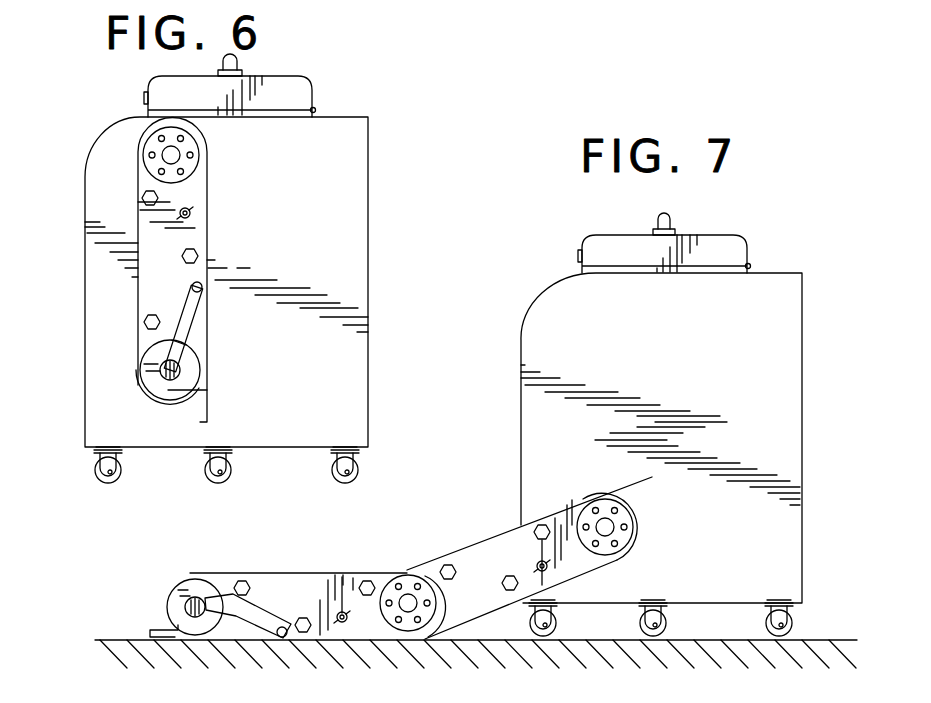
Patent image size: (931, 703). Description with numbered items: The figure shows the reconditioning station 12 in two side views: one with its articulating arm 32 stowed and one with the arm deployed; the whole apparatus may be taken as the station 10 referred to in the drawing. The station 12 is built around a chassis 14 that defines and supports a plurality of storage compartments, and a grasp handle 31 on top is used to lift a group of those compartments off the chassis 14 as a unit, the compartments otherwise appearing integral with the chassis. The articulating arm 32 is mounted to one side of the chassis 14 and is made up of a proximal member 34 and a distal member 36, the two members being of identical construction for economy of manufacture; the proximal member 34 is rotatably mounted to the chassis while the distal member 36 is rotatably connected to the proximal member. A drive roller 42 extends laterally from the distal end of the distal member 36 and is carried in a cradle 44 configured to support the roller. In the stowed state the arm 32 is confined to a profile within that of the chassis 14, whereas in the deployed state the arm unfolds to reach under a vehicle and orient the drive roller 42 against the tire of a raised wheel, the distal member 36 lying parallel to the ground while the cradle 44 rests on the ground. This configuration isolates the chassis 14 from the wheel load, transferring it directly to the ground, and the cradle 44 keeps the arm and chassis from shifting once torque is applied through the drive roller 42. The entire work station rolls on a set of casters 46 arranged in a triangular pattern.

In FIG. 7, the filling apparatus 10 is at (168, 577).
In FIG. 6, the reconditioning station 12 is at (80, 150).
In FIG. 7, the reconditioning station 12 is at (818, 293).
In FIG. 6, the chassis 14 is at (369, 272).
In FIG. 7, the chassis 14 is at (803, 412).
In FIG. 6, the grasp handle 31 is at (240, 65).
In FIG. 7, the grasp handle 31 is at (671, 220).
In FIG. 6, the articulating arm 32 is at (206, 281).
In FIG. 7, the articulating arm 32 is at (400, 590).
In FIG. 7, the proximal member 34 is at (485, 550).
In FIG. 6, the distal member 36 is at (178, 243).
In FIG. 7, the distal member 36 is at (315, 583).
In FIG. 6, the drive roller 42 is at (167, 390).
In FIG. 7, the drive roller 42 is at (170, 597).
In FIG. 6, the cradle 44 is at (198, 373).
In FIG. 7, the cradle 44 is at (207, 626).
In FIG. 6, the casters 46 is at (100, 480).